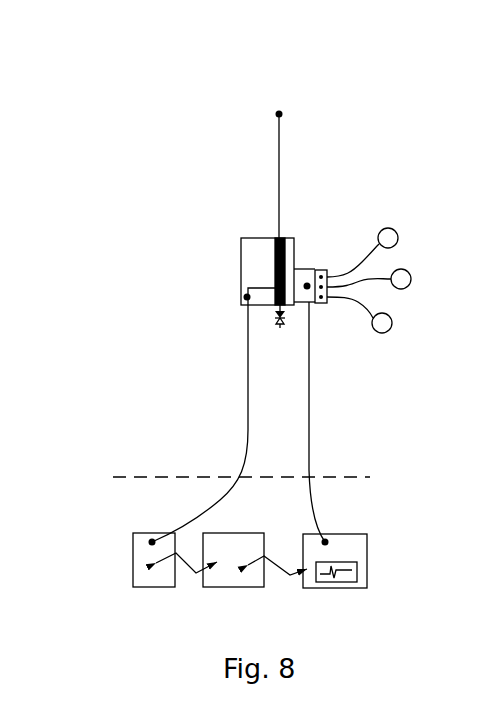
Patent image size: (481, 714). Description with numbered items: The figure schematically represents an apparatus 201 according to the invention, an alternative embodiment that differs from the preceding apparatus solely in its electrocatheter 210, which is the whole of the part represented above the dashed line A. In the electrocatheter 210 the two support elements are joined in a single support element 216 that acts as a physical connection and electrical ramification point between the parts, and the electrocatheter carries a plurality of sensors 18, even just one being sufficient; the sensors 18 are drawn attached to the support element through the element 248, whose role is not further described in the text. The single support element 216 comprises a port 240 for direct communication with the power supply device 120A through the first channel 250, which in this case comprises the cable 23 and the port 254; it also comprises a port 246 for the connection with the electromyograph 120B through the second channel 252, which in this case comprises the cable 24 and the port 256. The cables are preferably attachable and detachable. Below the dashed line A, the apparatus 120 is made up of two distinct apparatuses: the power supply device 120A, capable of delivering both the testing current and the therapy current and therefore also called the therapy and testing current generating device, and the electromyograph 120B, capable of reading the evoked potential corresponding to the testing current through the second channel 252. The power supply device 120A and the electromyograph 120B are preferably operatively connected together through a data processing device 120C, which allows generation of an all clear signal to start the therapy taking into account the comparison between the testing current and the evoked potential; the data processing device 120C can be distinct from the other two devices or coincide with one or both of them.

The apparatus 201 is at (149, 120).
The electrocatheter 210 is at (117, 268).
The single support element 216 is at (245, 237).
The port 240 is at (247, 297).
The port 246 is at (308, 283).
The connector 248 is at (322, 303).
The sensors 18 is at (396, 230).
The first channel 250 is at (245, 449).
The second channel 252 is at (311, 453).
The dashed line A is at (113, 477).
The electrical connection cable 23 is at (195, 514).
The electrical connection cable 24 is at (313, 502).
The port 254 is at (152, 542).
The port 256 is at (330, 543).
The apparatus 120 is at (112, 572).
The power supply device 120A is at (147, 578).
The data processing device 120C is at (233, 578).
The electromyograph 120B is at (360, 582).